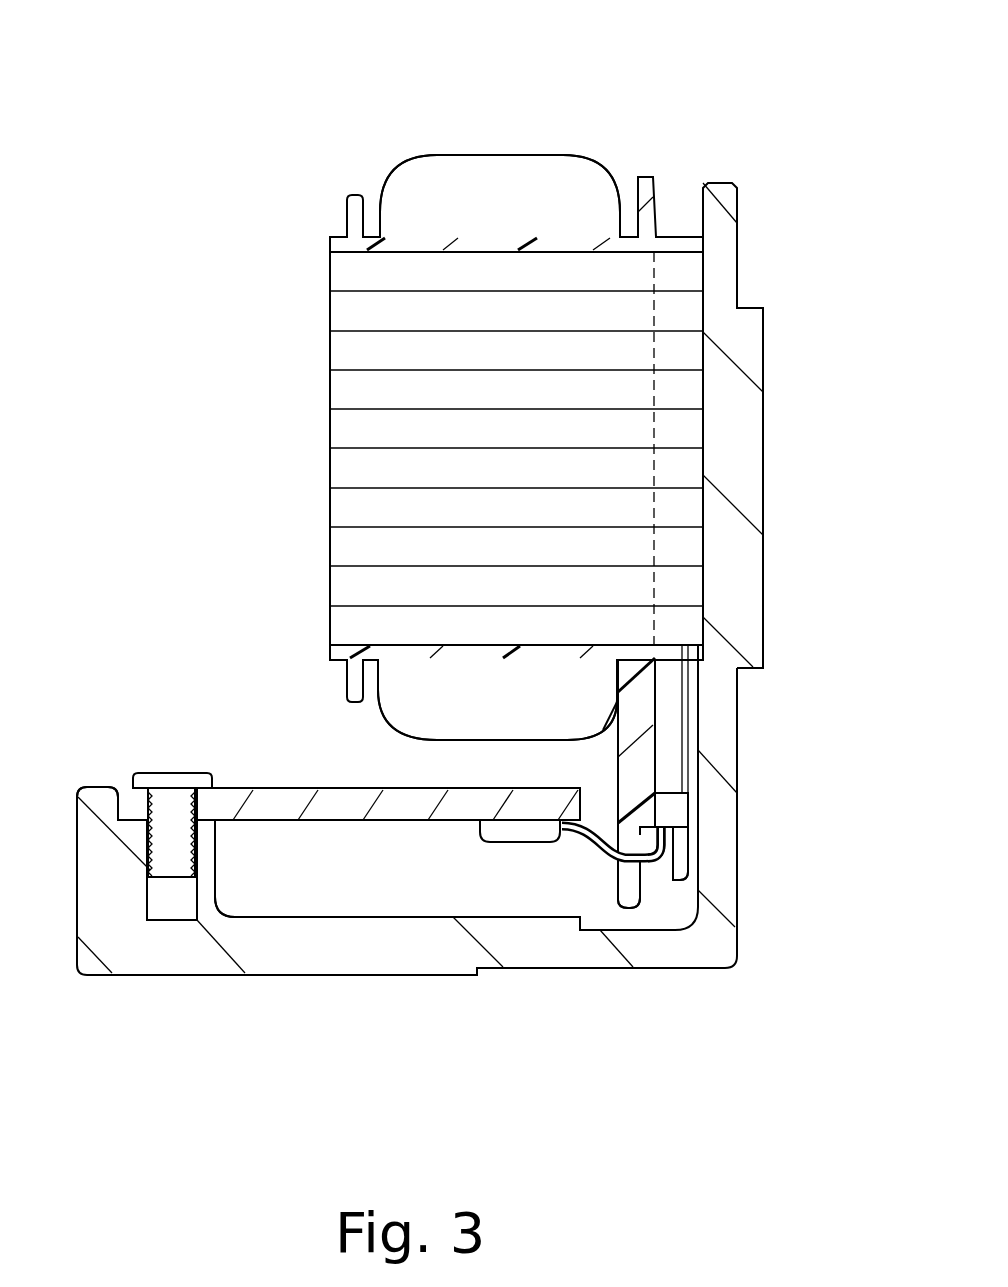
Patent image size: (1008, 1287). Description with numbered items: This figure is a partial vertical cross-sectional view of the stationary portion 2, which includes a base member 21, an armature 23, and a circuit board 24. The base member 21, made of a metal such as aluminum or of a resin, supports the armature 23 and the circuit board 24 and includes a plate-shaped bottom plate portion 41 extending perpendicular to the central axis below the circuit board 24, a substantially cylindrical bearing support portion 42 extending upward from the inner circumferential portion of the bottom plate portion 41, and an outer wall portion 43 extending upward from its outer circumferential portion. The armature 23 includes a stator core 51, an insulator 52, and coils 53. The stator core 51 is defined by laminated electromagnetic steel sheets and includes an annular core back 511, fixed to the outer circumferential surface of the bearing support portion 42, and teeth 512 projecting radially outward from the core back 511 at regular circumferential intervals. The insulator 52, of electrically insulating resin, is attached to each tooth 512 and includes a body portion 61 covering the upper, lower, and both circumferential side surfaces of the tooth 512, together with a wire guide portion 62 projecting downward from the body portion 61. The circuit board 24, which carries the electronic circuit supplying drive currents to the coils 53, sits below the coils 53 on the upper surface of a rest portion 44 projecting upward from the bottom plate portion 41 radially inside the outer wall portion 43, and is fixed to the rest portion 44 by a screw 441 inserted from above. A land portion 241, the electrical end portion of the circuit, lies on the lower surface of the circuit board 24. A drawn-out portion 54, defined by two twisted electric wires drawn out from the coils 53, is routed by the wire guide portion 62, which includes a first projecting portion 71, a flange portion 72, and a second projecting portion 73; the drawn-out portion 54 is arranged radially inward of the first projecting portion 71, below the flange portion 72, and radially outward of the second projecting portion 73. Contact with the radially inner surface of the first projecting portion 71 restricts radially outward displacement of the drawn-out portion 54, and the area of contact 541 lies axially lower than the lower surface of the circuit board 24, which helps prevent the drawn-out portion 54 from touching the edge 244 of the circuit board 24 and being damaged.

The stationary portion 2 is at (404, 102).
The base member 21 is at (210, 990).
The armature 23 is at (306, 386).
The circuit board 24 is at (298, 802).
The land portion 241 is at (517, 828).
The edge 244 is at (575, 828).
The bottom plate portion 41 is at (416, 953).
The bearing support portion 42 is at (733, 440).
The outer wall portion 43 is at (97, 845).
The rest portion 44 is at (207, 857).
The screw 441 is at (170, 807).
The stator core 51 is at (702, 80).
The core back 511 is at (677, 393).
The teeth 512 is at (513, 393).
The insulator 52 is at (328, 678).
The coils 53 is at (420, 715).
The drawn-out portion 54 is at (568, 840).
The area of contact 541 is at (653, 838).
The body portion 61 is at (467, 653).
The wire guide portion 62 is at (823, 788).
The first projecting portion 71 is at (632, 890).
The flange portion 72 is at (665, 812).
The second projecting portion 73 is at (683, 860).